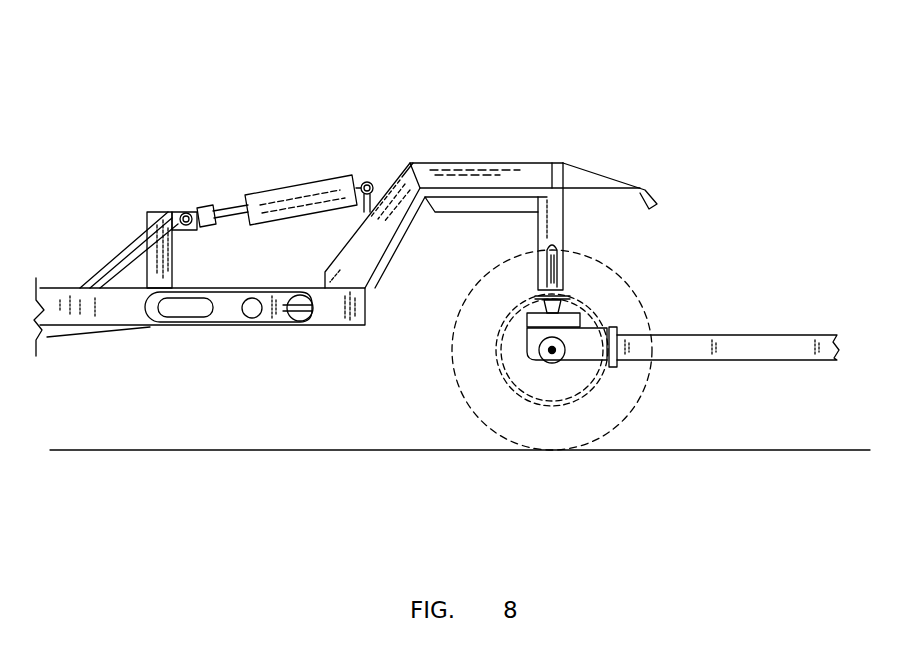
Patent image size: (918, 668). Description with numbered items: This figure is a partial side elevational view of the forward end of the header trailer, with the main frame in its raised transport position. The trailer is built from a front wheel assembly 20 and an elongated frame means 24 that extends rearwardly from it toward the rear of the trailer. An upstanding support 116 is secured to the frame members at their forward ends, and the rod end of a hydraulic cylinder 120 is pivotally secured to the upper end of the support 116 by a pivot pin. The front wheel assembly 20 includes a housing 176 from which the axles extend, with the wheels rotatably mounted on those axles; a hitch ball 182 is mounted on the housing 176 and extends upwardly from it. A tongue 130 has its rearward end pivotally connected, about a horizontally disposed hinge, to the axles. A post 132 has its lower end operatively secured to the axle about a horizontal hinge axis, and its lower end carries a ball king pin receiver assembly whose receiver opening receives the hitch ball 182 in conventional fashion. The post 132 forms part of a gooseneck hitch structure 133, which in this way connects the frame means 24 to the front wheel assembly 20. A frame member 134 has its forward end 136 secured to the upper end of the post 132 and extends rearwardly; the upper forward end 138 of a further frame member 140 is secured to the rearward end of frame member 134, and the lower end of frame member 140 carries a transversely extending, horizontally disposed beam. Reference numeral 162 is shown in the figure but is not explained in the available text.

The front wheel assembly 20 is at (643, 162).
The elongated frame means 24 is at (112, 325).
The upstanding support 116 is at (118, 255).
The hydraulic cylinder 120 is at (275, 183).
The tongue 130 is at (775, 335).
The post 132 is at (563, 222).
The gooseneck hitch structure 133 is at (500, 177).
The frame member 134 is at (473, 170).
The forward end of frame member 136 is at (550, 160).
The upper forward end of frame member 138 is at (403, 163).
The frame member 140 is at (357, 240).
The pivot pin 162 is at (382, 180).
The housing 176 is at (575, 290).
The hitch ball 182 is at (577, 296).